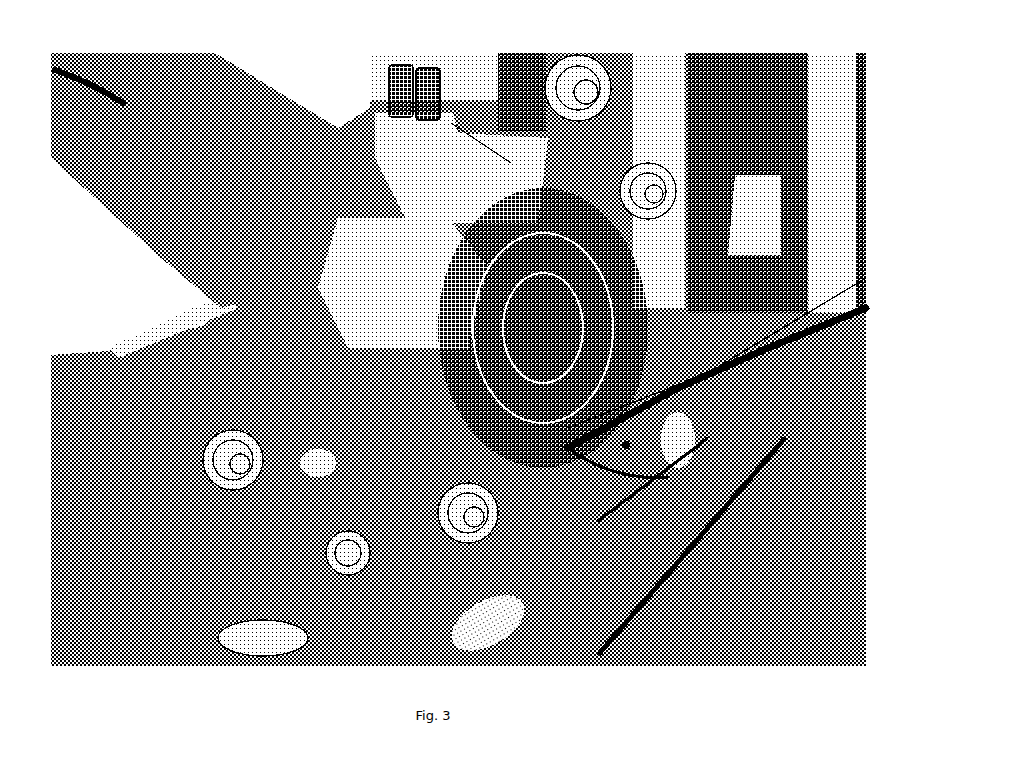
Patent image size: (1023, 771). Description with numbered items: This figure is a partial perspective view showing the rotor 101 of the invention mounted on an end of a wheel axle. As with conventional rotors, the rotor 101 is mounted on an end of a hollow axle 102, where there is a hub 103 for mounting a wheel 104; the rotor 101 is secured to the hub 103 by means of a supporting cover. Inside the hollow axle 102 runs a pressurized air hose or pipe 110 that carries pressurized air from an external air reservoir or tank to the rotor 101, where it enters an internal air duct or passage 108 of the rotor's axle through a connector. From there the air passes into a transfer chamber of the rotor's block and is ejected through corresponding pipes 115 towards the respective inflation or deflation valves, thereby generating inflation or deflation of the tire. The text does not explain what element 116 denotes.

The rotor 101 is at (652, 568).
The hollow axle 102 is at (160, 230).
The hub 103 is at (497, 195).
The wheel 104 is at (755, 533).
The internal air duct or passage 108 is at (548, 192).
The pressurized air hose or pipe 110 is at (295, 125).
The pipes 115 is at (773, 330).
The lower arm 116 is at (277, 627).